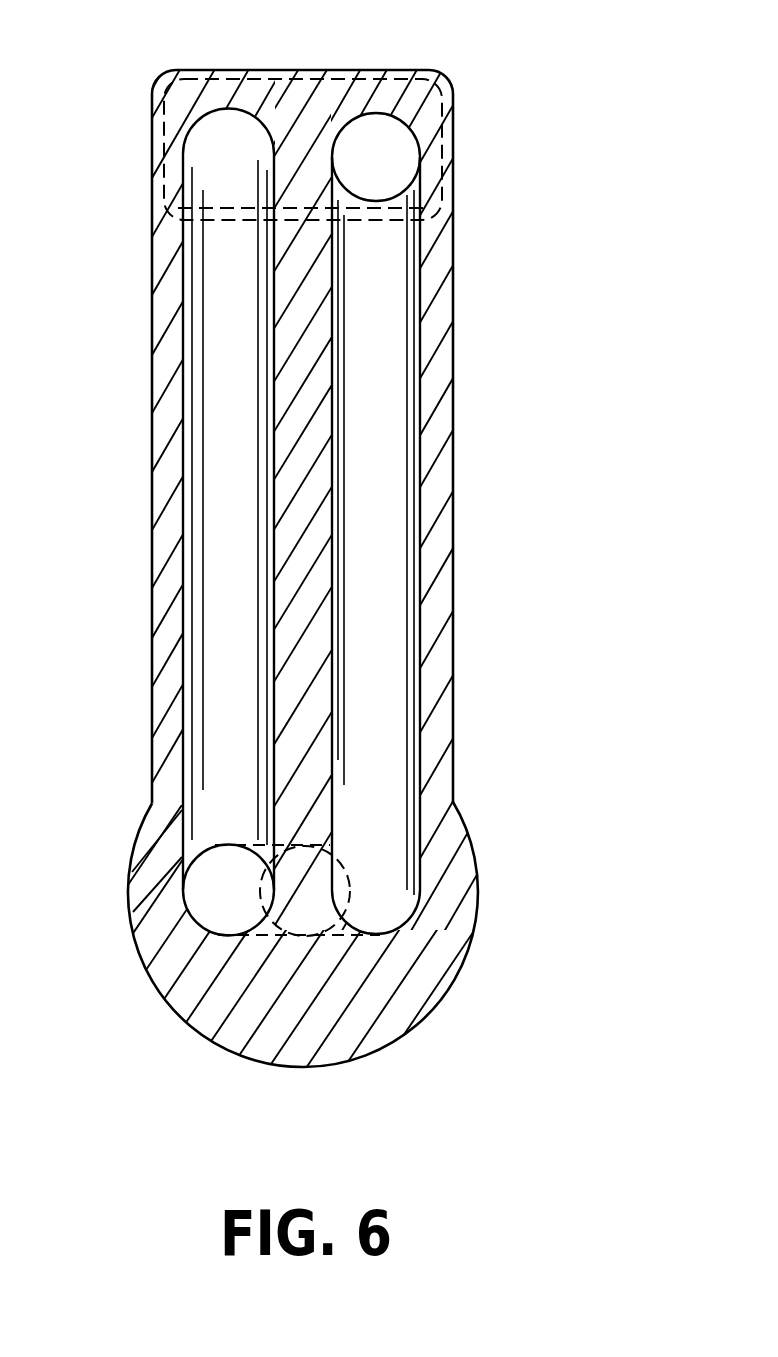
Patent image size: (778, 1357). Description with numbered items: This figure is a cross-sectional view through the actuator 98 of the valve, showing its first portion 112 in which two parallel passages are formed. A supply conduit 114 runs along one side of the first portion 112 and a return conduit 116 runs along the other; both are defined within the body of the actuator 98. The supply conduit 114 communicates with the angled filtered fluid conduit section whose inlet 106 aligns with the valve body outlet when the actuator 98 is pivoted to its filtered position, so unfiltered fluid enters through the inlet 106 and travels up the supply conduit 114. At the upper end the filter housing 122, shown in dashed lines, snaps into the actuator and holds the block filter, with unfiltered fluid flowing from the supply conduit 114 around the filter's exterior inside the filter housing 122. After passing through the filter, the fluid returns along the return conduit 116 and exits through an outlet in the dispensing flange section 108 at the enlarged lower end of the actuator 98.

The actuator 98 is at (389, 561).
The inlet 106 is at (301, 928).
The dispensing flange section 108 is at (448, 913).
The first portion 112 is at (442, 545).
The supply conduit 114 is at (213, 600).
The return conduit 116 is at (390, 657).
The filter housing 122 is at (330, 82).